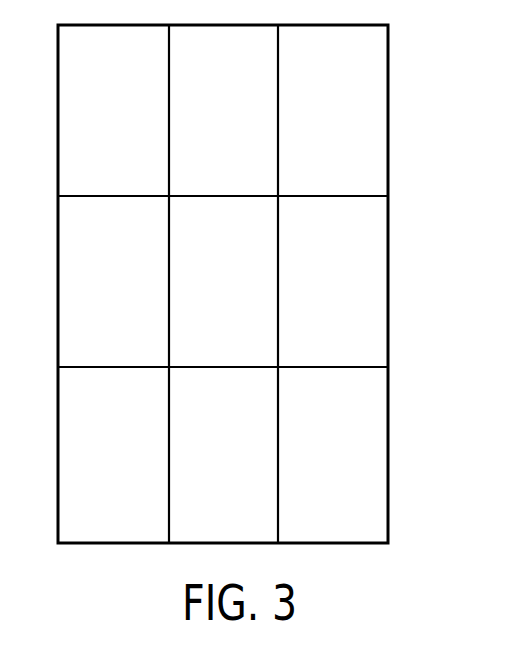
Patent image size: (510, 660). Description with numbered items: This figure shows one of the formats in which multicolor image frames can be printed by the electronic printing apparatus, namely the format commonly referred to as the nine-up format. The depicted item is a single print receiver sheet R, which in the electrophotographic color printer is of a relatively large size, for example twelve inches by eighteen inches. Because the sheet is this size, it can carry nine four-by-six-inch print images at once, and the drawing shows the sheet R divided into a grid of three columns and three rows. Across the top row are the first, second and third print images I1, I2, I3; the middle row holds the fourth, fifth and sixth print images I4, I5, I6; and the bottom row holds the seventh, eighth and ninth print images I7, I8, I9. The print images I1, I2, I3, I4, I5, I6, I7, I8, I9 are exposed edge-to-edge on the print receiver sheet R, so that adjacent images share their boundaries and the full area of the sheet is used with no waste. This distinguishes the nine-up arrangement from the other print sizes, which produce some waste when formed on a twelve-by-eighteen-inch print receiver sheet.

The print receiver sheet R is at (391, 148).
The print image I1 is at (136, 135).
The print image I2 is at (247, 135).
The print image I3 is at (352, 137).
The print image I4 is at (134, 304).
The print image I5 is at (244, 305).
The print image I6 is at (354, 305).
The print image I7 is at (136, 479).
The print image I8 is at (244, 480).
The print image I9 is at (355, 480).